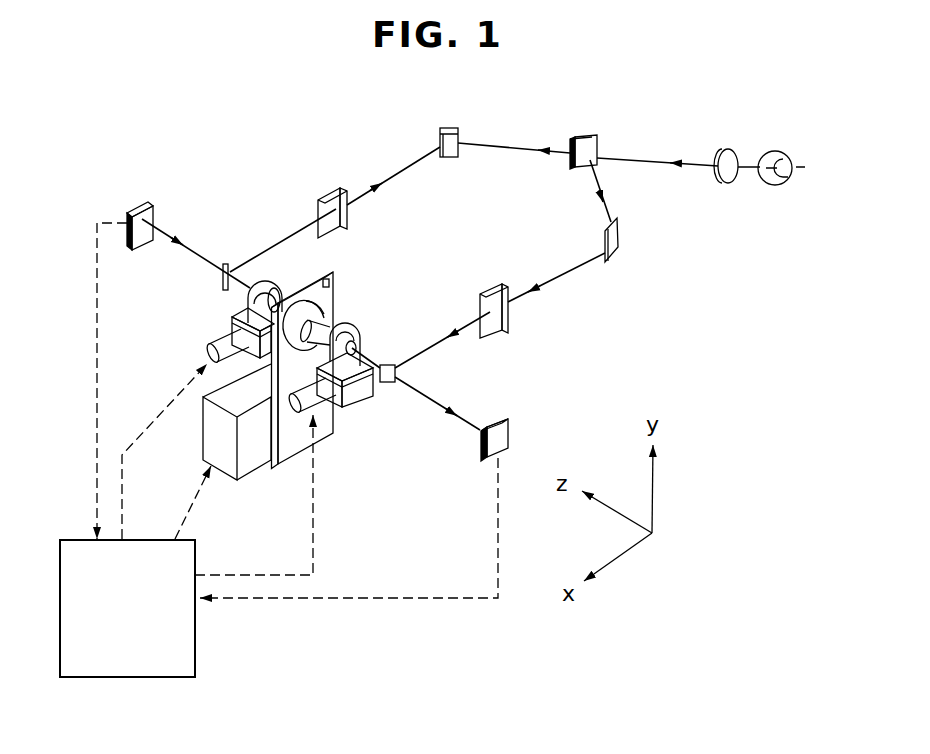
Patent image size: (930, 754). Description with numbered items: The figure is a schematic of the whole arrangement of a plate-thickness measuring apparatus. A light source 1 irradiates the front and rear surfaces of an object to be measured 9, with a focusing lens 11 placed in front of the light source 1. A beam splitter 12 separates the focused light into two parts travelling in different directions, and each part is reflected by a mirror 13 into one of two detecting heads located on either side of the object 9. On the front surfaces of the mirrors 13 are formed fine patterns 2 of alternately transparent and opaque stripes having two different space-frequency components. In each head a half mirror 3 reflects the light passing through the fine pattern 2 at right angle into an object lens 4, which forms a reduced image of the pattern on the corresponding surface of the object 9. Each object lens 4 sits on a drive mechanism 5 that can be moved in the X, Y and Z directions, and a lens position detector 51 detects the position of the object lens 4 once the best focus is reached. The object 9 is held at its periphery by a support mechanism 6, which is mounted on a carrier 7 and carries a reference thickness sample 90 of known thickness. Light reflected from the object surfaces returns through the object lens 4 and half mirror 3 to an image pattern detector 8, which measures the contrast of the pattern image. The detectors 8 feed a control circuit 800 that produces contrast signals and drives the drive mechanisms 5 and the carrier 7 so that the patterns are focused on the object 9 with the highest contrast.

The light source 1 is at (783, 151).
The focusing lens 11 is at (725, 149).
The beam splitter 12 is at (590, 137).
The reflecting mirror 13 is at (458, 130).
The fine pattern 2 is at (328, 188).
The half mirror 3 is at (224, 264).
The object lens 4 is at (254, 284).
The drive mechanism 5 is at (231, 325).
The lens position detector 51 is at (233, 312).
The support mechanism 6 is at (294, 292).
The object to be measured 9 is at (311, 284).
The reference thickness sample 90 is at (334, 283).
The carrier 7 is at (257, 464).
The image pattern detector 8 is at (138, 246).
The control circuit 800 is at (71, 540).